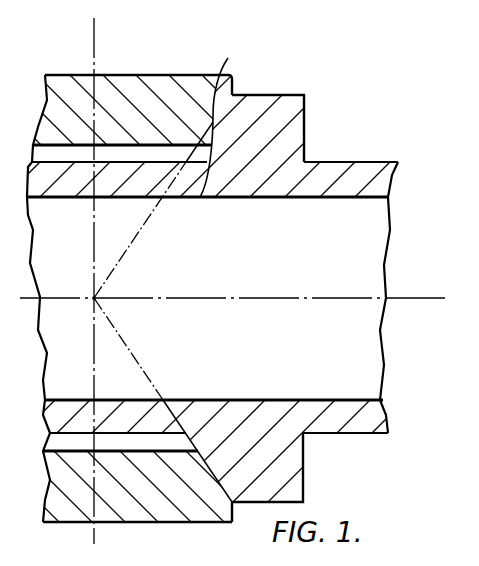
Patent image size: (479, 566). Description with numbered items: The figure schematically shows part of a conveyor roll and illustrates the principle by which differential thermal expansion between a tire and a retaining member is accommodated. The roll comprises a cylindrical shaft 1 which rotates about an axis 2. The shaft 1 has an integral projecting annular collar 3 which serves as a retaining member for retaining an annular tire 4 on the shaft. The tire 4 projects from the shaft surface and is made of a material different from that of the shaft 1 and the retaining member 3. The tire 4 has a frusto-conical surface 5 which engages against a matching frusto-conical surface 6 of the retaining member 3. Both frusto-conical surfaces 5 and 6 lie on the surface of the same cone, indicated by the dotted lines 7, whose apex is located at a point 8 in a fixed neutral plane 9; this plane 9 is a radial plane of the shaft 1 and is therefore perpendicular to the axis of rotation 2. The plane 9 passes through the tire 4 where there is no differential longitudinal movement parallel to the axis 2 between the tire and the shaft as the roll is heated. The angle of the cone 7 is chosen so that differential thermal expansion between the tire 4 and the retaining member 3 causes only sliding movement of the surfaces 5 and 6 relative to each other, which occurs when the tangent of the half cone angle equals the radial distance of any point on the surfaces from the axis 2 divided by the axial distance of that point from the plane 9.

The cylindrical shaft 1 is at (357, 162).
The axis 2 is at (413, 299).
The retaining member 3 is at (288, 95).
The annular tire 4 is at (150, 75).
The frusto-conical surface 5 is at (231, 91).
The frusto-conical surface 6 is at (200, 198).
The cone 7 is at (134, 236).
The point 8 is at (92, 300).
The neutral plane 9 is at (92, 55).